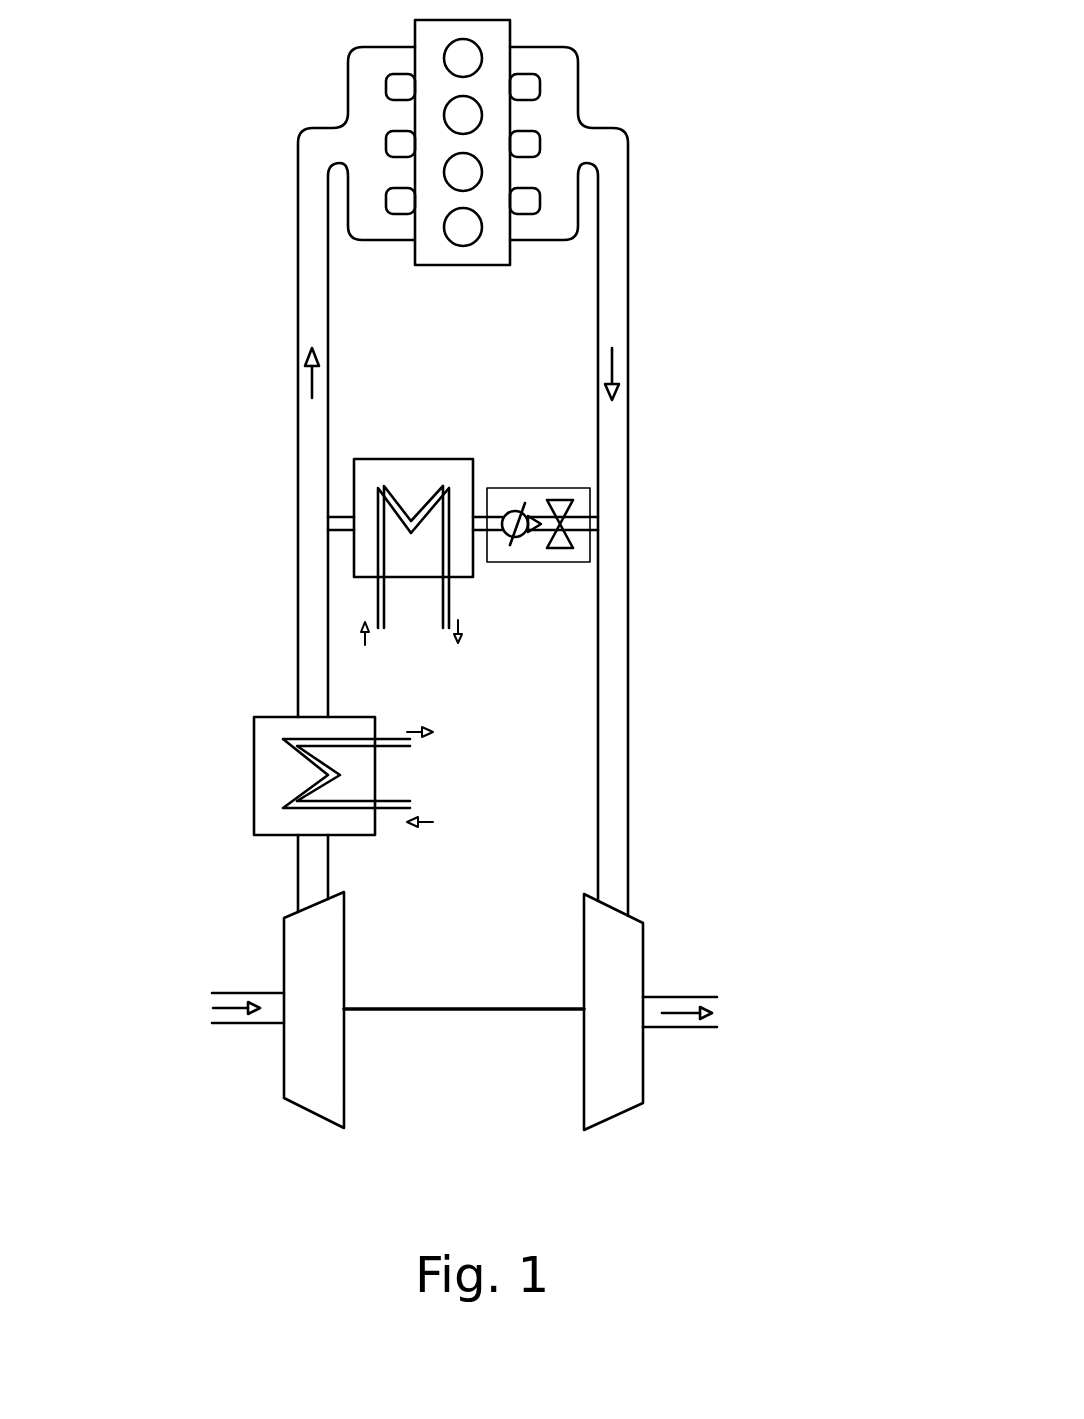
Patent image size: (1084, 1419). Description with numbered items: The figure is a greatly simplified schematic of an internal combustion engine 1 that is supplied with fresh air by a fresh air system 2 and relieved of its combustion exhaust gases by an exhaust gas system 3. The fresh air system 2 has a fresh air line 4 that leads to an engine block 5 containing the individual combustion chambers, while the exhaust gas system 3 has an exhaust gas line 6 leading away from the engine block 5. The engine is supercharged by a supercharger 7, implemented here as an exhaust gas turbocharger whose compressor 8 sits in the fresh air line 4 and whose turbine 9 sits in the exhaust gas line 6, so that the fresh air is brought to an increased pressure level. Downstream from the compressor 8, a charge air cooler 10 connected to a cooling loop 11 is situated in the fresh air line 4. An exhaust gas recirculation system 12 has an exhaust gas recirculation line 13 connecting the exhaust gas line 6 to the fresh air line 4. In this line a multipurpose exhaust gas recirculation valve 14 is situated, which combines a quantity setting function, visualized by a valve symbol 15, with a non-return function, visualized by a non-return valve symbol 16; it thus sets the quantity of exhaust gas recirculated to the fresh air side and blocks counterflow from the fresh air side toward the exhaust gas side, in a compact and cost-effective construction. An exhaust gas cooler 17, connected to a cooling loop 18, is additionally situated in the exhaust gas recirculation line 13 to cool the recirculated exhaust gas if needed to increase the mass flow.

The internal combustion engine 1 is at (758, 127).
The fresh air system 2 is at (289, 479).
The exhaust gas system 3 is at (637, 481).
The fresh air line 4 is at (315, 442).
The engine block 5 is at (490, 42).
The exhaust gas line 6 is at (607, 453).
The supercharger 7 is at (478, 1071).
The compressor 8 is at (303, 1060).
The turbine 9 is at (632, 1073).
The charge air cooler 10 is at (305, 776).
The cooling loop 11 is at (398, 748).
The exhaust gas recirculation system 12 is at (390, 502).
The exhaust gas recirculation line 13 is at (345, 530).
The exhaust gas recirculation valve 14 is at (533, 536).
The valve symbol 15 is at (558, 527).
The non-return valve symbol 16 is at (507, 520).
The exhaust gas cooler 17 is at (402, 473).
The cooling loop 18 is at (385, 600).